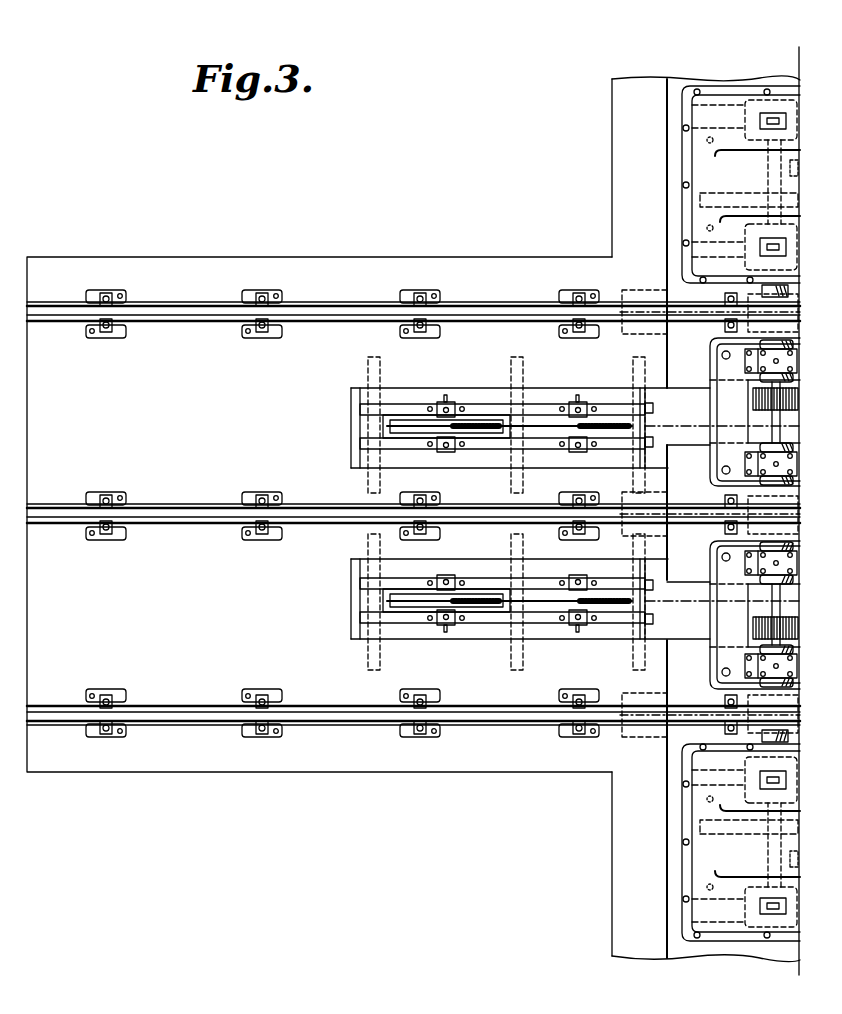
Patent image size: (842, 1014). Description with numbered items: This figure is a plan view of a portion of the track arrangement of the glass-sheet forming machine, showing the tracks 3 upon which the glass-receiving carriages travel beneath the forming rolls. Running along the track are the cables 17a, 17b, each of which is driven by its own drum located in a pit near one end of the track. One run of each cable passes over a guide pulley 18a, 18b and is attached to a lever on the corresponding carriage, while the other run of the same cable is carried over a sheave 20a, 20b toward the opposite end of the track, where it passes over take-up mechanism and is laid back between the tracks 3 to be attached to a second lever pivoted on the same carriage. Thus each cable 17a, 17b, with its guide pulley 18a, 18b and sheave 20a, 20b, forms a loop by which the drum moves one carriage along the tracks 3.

The tracks 3 is at (167, 312).
The guide pulley 18b is at (415, 423).
The sheave 20b is at (557, 421).
The cable 17b is at (663, 425).
The guide pulley 18a is at (413, 604).
The sheave 20a is at (547, 604).
The cable 17a is at (713, 629).